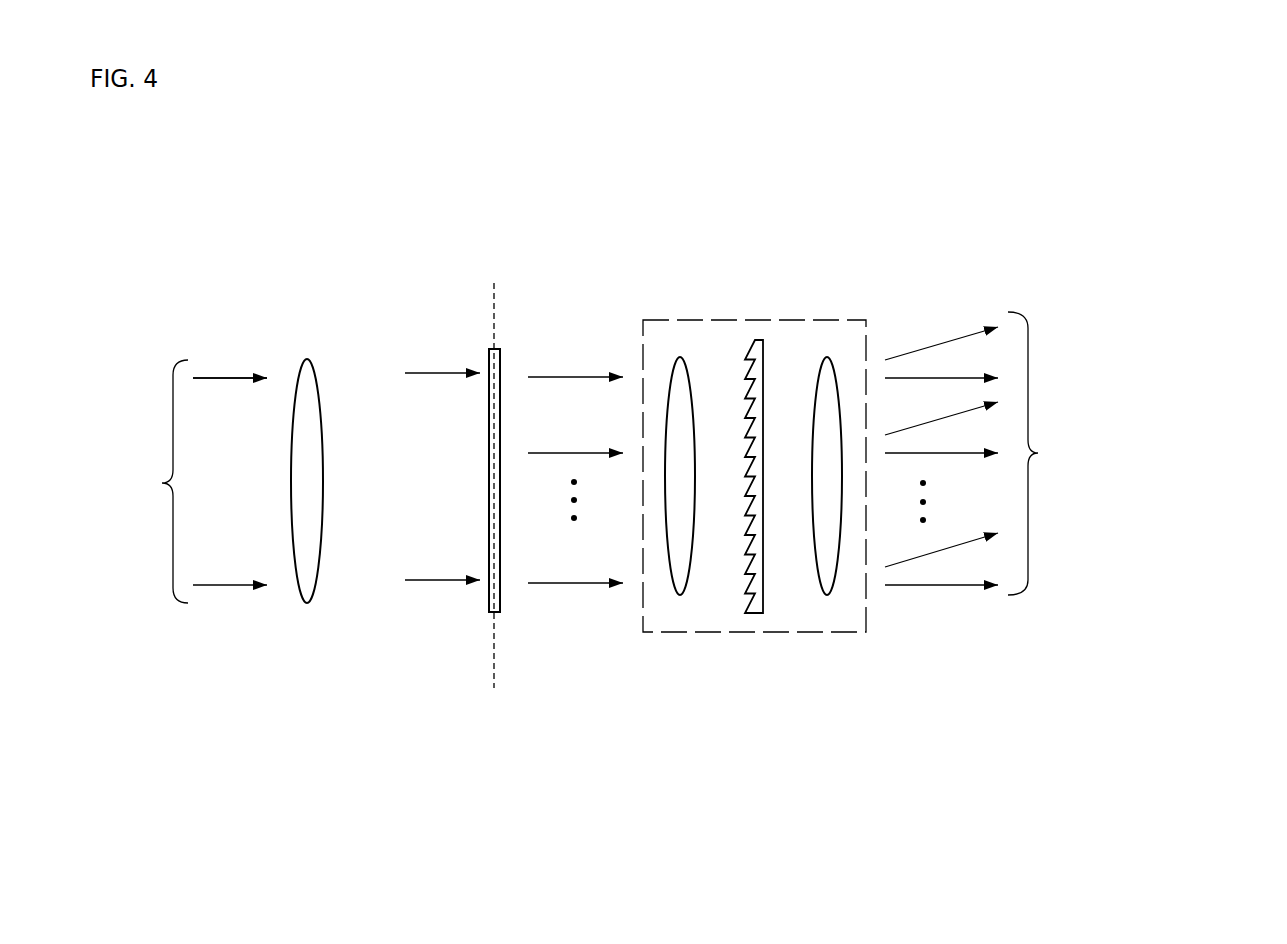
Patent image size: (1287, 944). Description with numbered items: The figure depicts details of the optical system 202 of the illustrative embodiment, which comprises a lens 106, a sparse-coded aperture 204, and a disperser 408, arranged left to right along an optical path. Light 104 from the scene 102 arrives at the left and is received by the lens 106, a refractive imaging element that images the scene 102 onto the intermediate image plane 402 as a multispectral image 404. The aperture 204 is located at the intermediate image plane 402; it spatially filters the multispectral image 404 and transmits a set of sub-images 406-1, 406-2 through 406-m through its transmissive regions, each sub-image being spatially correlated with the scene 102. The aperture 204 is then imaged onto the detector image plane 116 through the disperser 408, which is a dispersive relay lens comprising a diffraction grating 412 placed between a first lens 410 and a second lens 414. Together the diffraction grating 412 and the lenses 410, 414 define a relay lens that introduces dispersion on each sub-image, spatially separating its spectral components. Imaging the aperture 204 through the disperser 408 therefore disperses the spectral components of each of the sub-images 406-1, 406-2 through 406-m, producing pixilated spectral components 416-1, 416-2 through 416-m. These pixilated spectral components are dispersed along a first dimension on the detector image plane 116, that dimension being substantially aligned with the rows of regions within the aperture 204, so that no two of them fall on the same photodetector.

The optical system 202 is at (212, 183).
The scene 102 is at (180, 481).
The light 104 is at (207, 447).
The lens 106 is at (303, 603).
The intermediate image plane 402 is at (492, 322).
The aperture 204 is at (488, 603).
The multispectral image 404 is at (462, 482).
The sub-image 406-1 is at (590, 375).
The sub-image 406-2 is at (590, 451).
The sub-image 406-m is at (590, 581).
The disperser 408 is at (747, 632).
The lens 410 is at (680, 357).
The diffraction grating 412 is at (748, 350).
The lens 414 is at (827, 357).
The pixilated spectral component 416-1 is at (1010, 367).
The pixilated spectral component 416-2 is at (1010, 442).
The pixilated spectral component 416-m is at (1012, 574).
The detector image plane 116 is at (1130, 453).